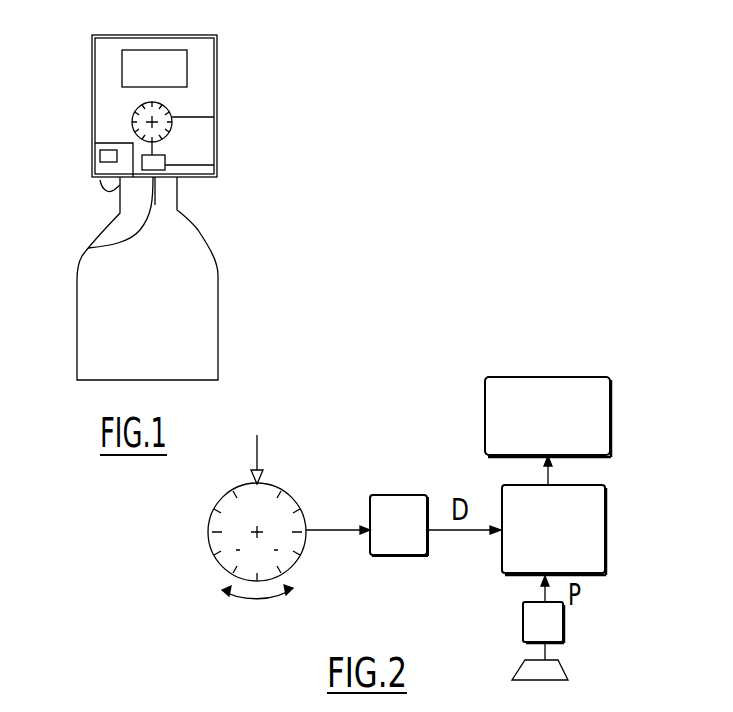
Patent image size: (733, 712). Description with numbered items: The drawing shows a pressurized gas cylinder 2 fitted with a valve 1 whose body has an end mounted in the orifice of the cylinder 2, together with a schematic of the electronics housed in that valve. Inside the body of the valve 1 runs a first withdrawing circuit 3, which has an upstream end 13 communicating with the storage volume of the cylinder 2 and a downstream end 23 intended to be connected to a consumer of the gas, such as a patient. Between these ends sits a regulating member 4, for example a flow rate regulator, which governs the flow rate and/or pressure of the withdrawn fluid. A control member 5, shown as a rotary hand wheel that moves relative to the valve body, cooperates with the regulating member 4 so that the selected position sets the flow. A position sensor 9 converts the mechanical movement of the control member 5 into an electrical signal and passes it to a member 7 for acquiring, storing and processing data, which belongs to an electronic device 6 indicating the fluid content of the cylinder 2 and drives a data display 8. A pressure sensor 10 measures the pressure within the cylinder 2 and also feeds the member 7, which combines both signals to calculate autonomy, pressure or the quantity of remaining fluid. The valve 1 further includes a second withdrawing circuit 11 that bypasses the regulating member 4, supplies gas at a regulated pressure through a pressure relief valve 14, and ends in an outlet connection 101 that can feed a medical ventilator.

In FIG. 1, the valve 1 is at (92, 127).
In FIG. 1, the pressurized gas cylinder 2 is at (78, 277).
In FIG. 2, the pressurized gas cylinder 2 is at (517, 666).
In FIG. 1, the first withdrawing circuit 3 is at (217, 167).
In FIG. 1, the regulating member 4 is at (165, 160).
In FIG. 2, the regulating member 4 is at (206, 547).
In FIG. 1, the control member 5 is at (172, 128).
In FIG. 2, the control member 5 is at (242, 621).
In FIG. 2, the electronic device 6 is at (616, 482).
In FIG. 2, the member for acquiring, storing and processing data 7 is at (562, 547).
In FIG. 1, the data display 8 is at (122, 68).
In FIG. 2, the data display 8 is at (562, 434).
In FIG. 2, the position sensor 9 is at (411, 541).
In FIG. 2, the pressure sensor 10 is at (543, 609).
In FIG. 1, the second withdrawing circuit 11 is at (110, 193).
In FIG. 1, the upstream end 13 is at (88, 247).
In FIG. 1, the pressure relief valve 14 is at (112, 140).
In FIG. 1, the downstream end 23 is at (217, 118).
In FIG. 1, the outlet connection 101 is at (100, 187).